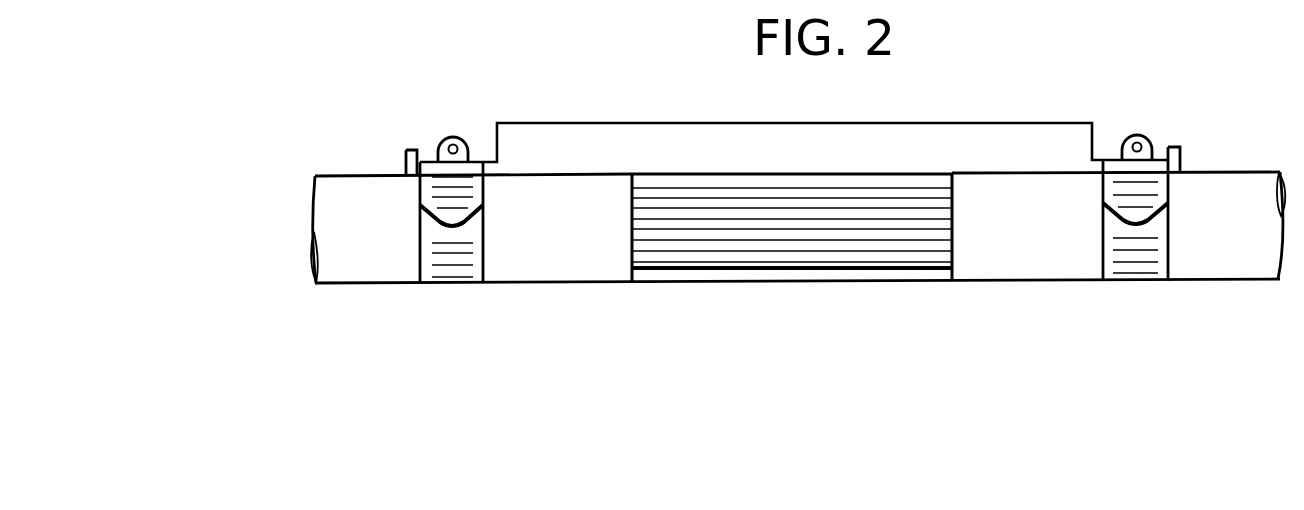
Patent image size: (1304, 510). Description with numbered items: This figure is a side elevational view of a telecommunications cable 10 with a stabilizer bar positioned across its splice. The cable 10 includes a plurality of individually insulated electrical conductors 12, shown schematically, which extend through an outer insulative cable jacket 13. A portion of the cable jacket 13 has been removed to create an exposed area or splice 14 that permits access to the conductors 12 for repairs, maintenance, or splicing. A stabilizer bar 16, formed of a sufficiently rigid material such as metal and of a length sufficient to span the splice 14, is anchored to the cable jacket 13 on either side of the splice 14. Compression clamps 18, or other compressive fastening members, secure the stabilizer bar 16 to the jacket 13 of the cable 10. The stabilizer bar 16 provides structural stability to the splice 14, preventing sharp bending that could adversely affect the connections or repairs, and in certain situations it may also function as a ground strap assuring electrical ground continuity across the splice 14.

The telecommunications cable 10 is at (1033, 306).
The individually insulated electrical conductors 12 is at (647, 225).
The outer insulative cable jacket 13 is at (325, 218).
The exposed area (splice) 14 is at (950, 290).
The stabilizer bar 16 is at (1022, 150).
The compression clamps 18 is at (423, 243).